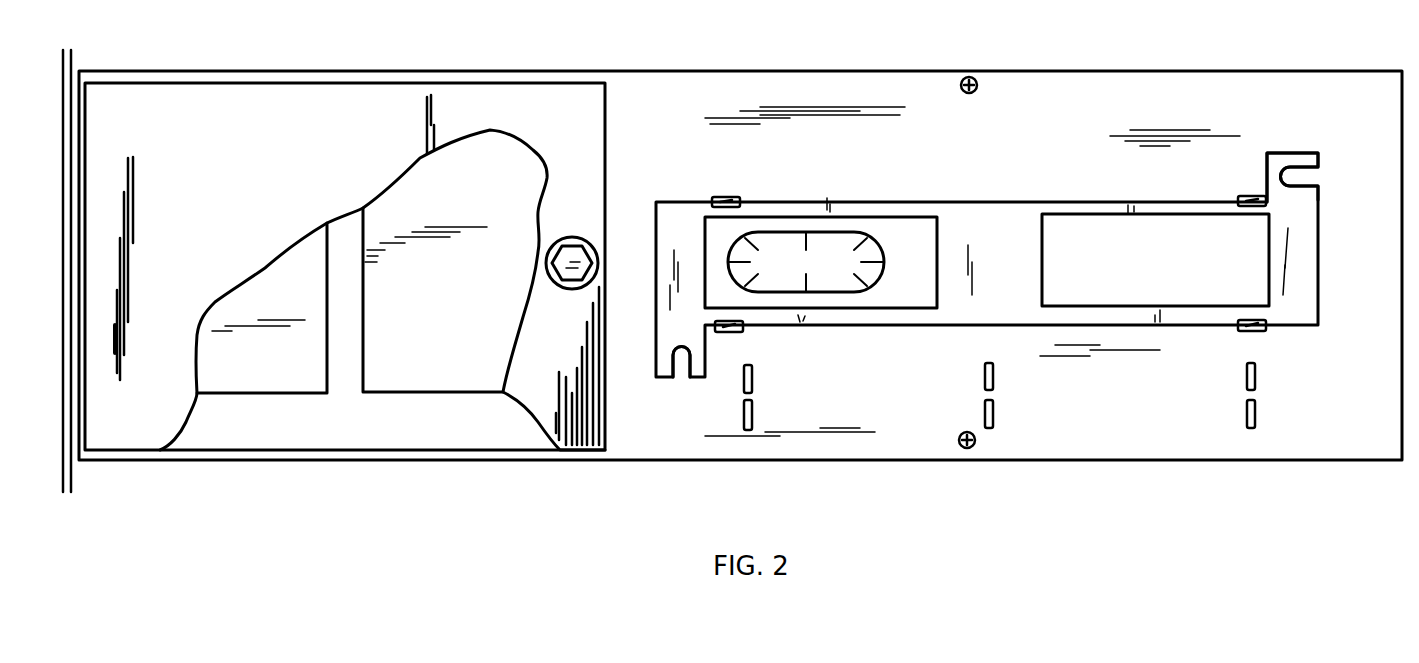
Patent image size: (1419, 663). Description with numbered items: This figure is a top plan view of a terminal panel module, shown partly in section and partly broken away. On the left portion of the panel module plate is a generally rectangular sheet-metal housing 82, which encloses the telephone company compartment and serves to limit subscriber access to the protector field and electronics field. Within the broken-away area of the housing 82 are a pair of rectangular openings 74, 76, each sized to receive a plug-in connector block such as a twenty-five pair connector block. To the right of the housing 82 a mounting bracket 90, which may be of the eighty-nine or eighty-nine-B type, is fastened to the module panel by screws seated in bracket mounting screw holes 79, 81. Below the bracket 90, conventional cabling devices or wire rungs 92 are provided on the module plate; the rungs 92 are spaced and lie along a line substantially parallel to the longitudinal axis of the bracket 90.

The rectangular opening 74 is at (299, 370).
The rectangular opening 76 is at (447, 360).
The bracket mounting screw hole 79 is at (683, 360).
The bracket mounting screw hole 81 is at (1307, 178).
The housing 82 is at (606, 122).
The mounting bracket 90 is at (1012, 213).
The wire rungs 92 is at (752, 416).